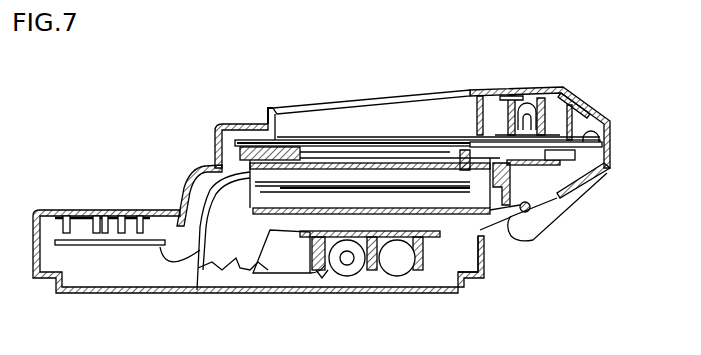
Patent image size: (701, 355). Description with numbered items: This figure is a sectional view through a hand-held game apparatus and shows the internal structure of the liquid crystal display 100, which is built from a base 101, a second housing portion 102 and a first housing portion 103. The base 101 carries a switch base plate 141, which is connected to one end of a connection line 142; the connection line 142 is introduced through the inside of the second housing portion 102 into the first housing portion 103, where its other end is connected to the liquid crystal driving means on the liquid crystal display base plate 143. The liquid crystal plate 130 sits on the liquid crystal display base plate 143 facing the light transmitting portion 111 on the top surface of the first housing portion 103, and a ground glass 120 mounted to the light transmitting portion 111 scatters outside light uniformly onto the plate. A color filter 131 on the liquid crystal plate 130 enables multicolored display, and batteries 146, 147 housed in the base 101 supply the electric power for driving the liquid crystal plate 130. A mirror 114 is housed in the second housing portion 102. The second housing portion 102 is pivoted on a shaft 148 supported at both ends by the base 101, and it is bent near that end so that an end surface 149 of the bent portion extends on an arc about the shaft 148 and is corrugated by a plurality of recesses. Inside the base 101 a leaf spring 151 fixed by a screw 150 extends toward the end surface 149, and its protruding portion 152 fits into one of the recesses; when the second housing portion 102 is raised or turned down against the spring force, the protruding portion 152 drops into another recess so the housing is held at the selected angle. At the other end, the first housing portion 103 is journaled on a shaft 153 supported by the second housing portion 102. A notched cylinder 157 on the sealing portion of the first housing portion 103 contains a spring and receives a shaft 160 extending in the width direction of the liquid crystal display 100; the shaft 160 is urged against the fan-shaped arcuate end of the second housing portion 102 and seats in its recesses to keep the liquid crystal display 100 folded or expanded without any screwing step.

The liquid crystal display 100 is at (184, 125).
The base 101 is at (453, 294).
The second housing portion 102 is at (483, 225).
The first housing portion 103 is at (612, 138).
The light transmitting portion 111 is at (385, 115).
The mirror 114 is at (480, 268).
The ground glass 120 is at (340, 107).
The liquid crystal plate 130 is at (303, 153).
The color filter 131 is at (353, 143).
The switch base plate 141 is at (97, 247).
The connection line 142 is at (200, 272).
The liquid crystal display base plate 143 is at (256, 121).
The battery 146 is at (350, 272).
The battery 147 is at (397, 272).
The shaft 148 is at (196, 181).
The end surface of the bent portion 149 is at (163, 265).
The screw 150 is at (322, 280).
The leaf spring 151 is at (282, 274).
The protruding portion 152 is at (247, 270).
The shaft 153 is at (530, 212).
The cylinder 157 is at (502, 93).
The shaft 160 is at (543, 100).